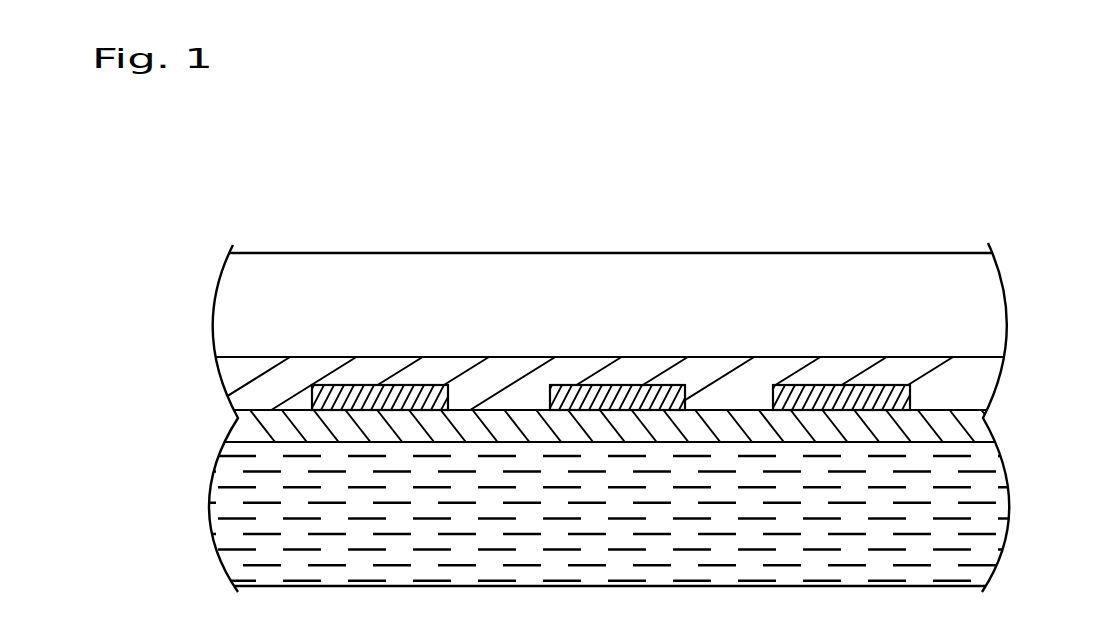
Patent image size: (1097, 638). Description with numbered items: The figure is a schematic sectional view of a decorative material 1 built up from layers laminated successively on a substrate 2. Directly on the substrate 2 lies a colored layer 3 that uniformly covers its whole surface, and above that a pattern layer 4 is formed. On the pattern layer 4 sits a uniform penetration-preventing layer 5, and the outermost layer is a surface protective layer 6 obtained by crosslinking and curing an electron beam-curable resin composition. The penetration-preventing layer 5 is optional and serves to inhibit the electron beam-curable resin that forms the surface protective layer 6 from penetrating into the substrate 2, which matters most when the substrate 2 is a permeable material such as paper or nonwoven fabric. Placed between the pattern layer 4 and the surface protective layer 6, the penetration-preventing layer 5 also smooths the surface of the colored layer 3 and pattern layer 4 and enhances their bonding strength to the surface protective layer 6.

The decorative material 1 is at (639, 367).
The substrate 2 is at (982, 518).
The colored layer 3 is at (970, 425).
The pattern layer 4 is at (913, 400).
The penetration-preventing layer 5 is at (968, 367).
The surface protective layer 6 is at (273, 305).